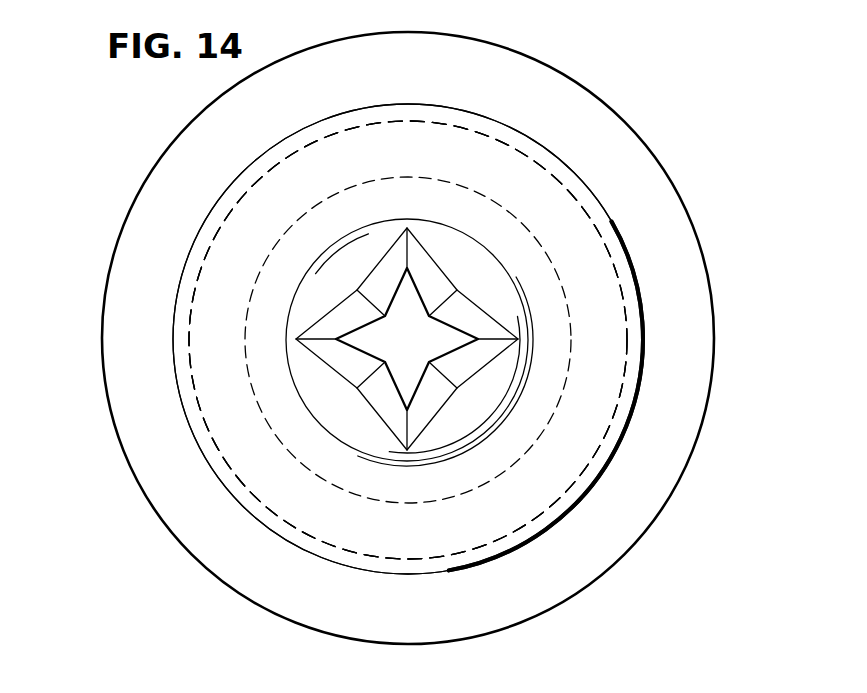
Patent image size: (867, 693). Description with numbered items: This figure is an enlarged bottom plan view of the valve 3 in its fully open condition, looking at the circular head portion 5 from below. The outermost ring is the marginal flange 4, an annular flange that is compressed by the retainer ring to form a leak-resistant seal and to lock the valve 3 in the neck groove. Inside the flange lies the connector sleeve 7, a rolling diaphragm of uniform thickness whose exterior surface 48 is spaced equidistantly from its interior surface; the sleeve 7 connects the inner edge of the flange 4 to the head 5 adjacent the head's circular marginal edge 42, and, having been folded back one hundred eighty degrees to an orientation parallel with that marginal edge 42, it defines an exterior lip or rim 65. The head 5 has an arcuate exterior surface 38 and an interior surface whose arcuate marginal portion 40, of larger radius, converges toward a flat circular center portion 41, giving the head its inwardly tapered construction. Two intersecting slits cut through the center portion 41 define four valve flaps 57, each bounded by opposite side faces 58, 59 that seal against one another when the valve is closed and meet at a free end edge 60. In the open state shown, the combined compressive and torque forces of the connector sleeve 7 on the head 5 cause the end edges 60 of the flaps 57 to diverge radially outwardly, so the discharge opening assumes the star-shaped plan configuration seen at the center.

The valve 3 is at (166, 137).
The marginal flange portion 4 is at (668, 486).
The head portion 5 is at (610, 322).
The connector sleeve portion 7 is at (645, 359).
The exterior surface 38 is at (305, 437).
The marginal portion 40 is at (607, 267).
The center portion 41 is at (414, 339).
The marginal edge 42 is at (562, 213).
The exterior surface 48 is at (186, 430).
The valve flaps 57 is at (338, 392).
The side face 58 is at (368, 400).
The side face 59 is at (457, 370).
The end edge 60 is at (409, 370).
The exterior lip or rim 65 is at (630, 420).